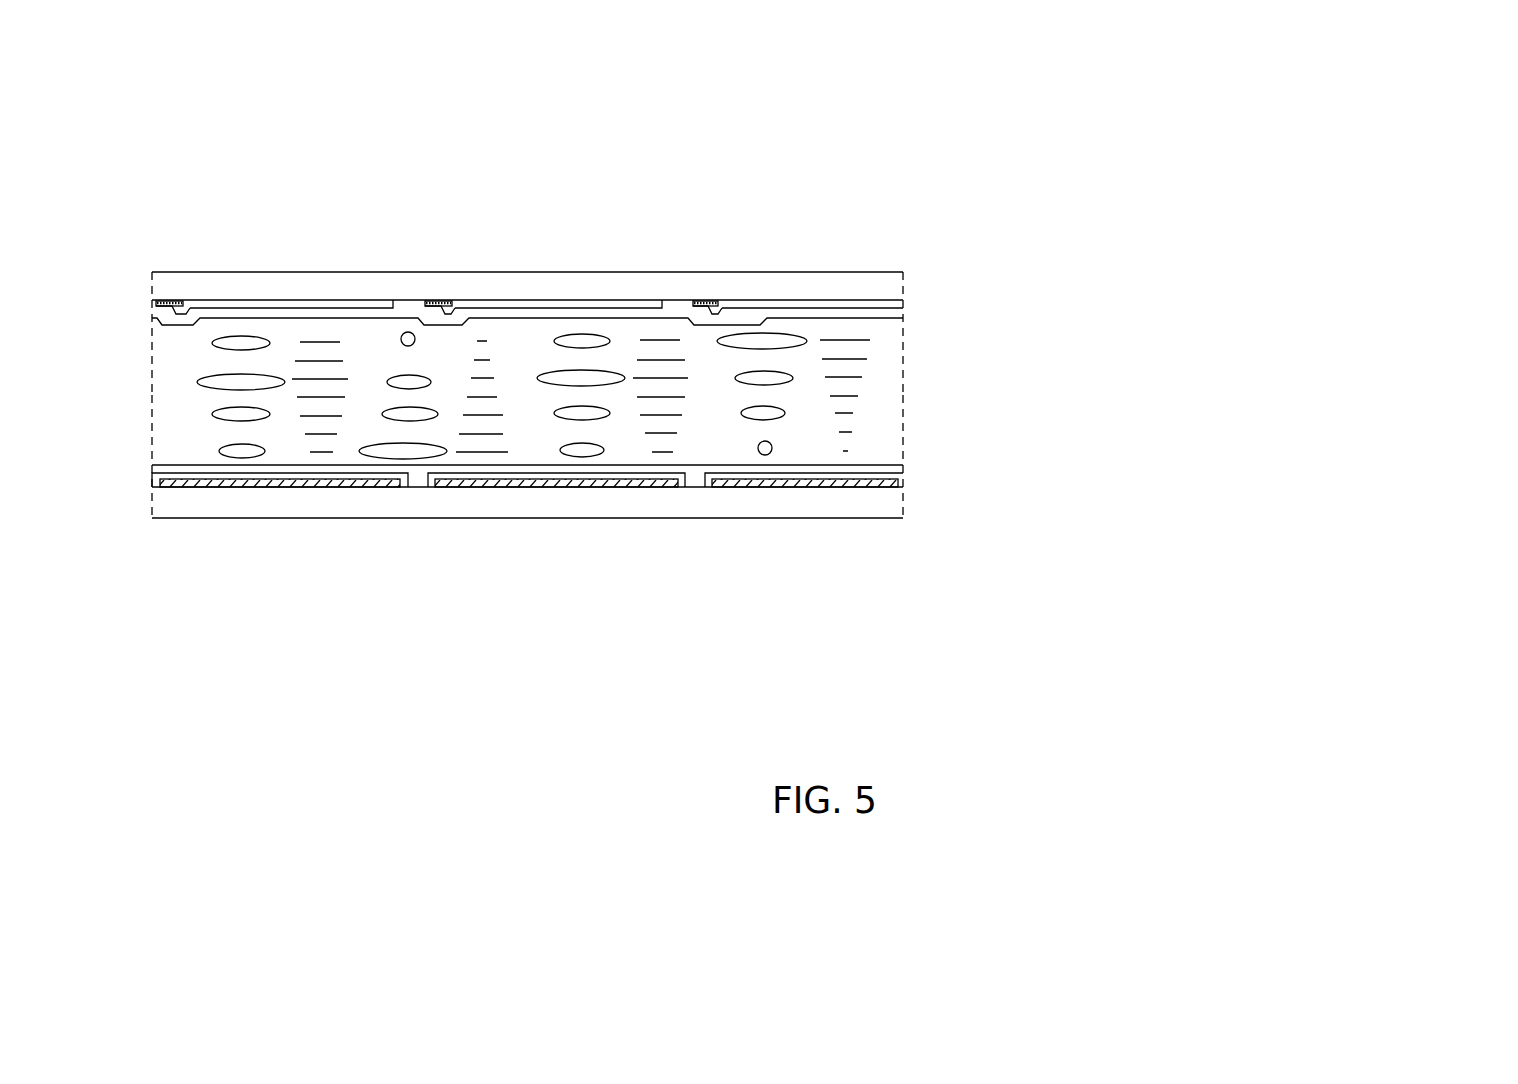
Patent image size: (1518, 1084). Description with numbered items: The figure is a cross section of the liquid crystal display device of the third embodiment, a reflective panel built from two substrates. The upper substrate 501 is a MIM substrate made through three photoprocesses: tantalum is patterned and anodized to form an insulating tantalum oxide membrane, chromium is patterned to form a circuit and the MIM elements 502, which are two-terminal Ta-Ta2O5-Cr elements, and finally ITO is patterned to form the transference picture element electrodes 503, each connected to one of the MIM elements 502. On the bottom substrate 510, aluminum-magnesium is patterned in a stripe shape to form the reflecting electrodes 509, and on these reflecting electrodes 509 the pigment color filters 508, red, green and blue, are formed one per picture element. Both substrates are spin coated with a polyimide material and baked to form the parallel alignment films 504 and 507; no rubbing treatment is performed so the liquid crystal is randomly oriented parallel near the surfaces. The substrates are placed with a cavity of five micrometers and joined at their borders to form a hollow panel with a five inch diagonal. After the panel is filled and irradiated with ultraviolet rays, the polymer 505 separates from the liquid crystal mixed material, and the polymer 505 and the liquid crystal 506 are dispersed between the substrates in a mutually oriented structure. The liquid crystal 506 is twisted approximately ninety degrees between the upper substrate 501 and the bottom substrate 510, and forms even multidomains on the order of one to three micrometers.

The upper substrate 501 is at (882, 280).
The MIM element 502 is at (715, 303).
The transference picture element electrode 503 is at (892, 305).
The parallel alignment film 504 is at (903, 320).
The polymer 505 is at (787, 372).
The liquid crystal 506 is at (850, 413).
The parallel alignment film 507 is at (893, 465).
The pigment color filter 508 is at (175, 482).
The reflecting electrode 509 is at (905, 477).
The bottom substrate 510 is at (892, 502).